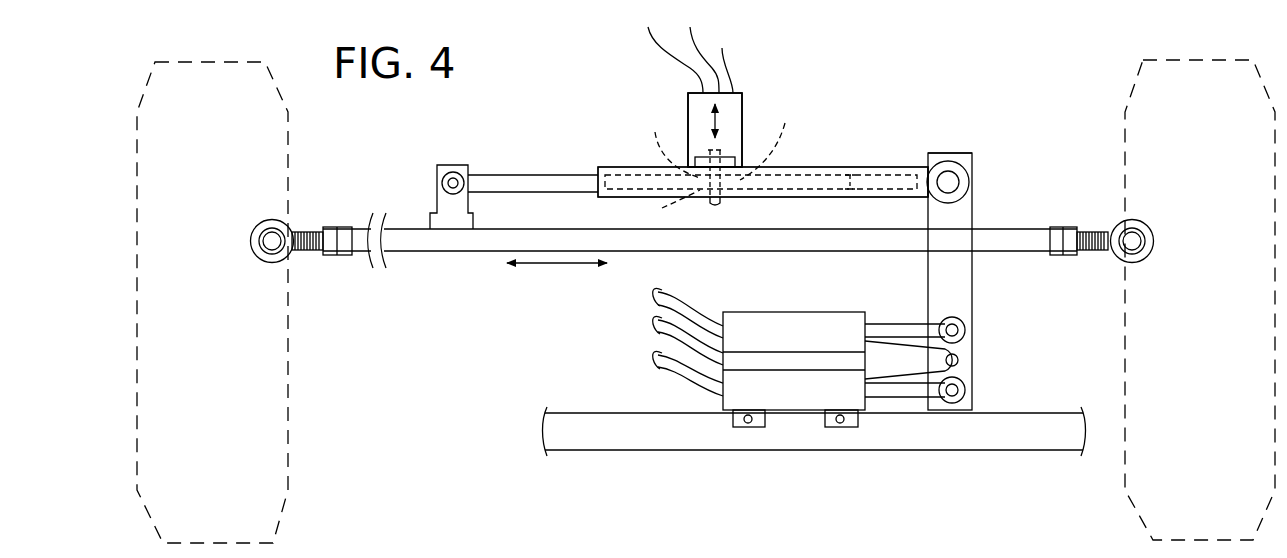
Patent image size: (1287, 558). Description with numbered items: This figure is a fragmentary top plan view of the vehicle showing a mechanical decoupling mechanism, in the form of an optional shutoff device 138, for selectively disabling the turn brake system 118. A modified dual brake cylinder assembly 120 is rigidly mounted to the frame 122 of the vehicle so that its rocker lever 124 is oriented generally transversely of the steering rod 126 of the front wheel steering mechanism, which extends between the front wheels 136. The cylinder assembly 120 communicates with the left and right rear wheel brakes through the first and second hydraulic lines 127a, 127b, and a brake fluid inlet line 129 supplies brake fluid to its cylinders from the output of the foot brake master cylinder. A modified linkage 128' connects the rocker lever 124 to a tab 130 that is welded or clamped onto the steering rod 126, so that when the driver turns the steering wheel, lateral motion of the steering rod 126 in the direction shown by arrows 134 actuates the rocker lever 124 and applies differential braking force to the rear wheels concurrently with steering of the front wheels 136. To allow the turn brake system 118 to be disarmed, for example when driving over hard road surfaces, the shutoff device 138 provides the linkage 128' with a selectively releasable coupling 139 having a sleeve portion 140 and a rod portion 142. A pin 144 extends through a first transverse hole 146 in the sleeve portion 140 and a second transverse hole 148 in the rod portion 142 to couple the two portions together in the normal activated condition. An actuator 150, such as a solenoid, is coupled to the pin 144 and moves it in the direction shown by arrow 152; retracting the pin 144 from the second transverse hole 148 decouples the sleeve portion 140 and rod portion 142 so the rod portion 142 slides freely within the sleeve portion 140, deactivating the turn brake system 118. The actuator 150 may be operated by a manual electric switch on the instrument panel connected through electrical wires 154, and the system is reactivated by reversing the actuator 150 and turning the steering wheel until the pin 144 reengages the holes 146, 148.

The turn brake system 118 is at (903, 75).
The dual brake cylinder assembly 120 is at (803, 312).
The frame 122 is at (562, 413).
The rocker lever 124 is at (968, 278).
The steering rod 126 is at (400, 228).
The first hydraulic line 127a is at (685, 383).
The second hydraulic line 127b is at (680, 307).
The modified linkage 128' is at (763, 128).
The brake fluid inlet line 129 is at (673, 348).
The tab 130 is at (435, 207).
The arrows 134 is at (553, 265).
The front wheels 136 is at (187, 62).
The shutoff device 138 is at (785, 76).
The selectively releasable coupling 139 is at (587, 117).
The sleeve portion 140 is at (855, 167).
The rod portion 142 is at (548, 175).
The pin 144 is at (720, 200).
The first transverse hole 146 is at (672, 212).
The second transverse hole 148 is at (774, 137).
The actuator 150 is at (718, 94).
The arrow 152 is at (717, 118).
The electrical wires 154 is at (672, 58).